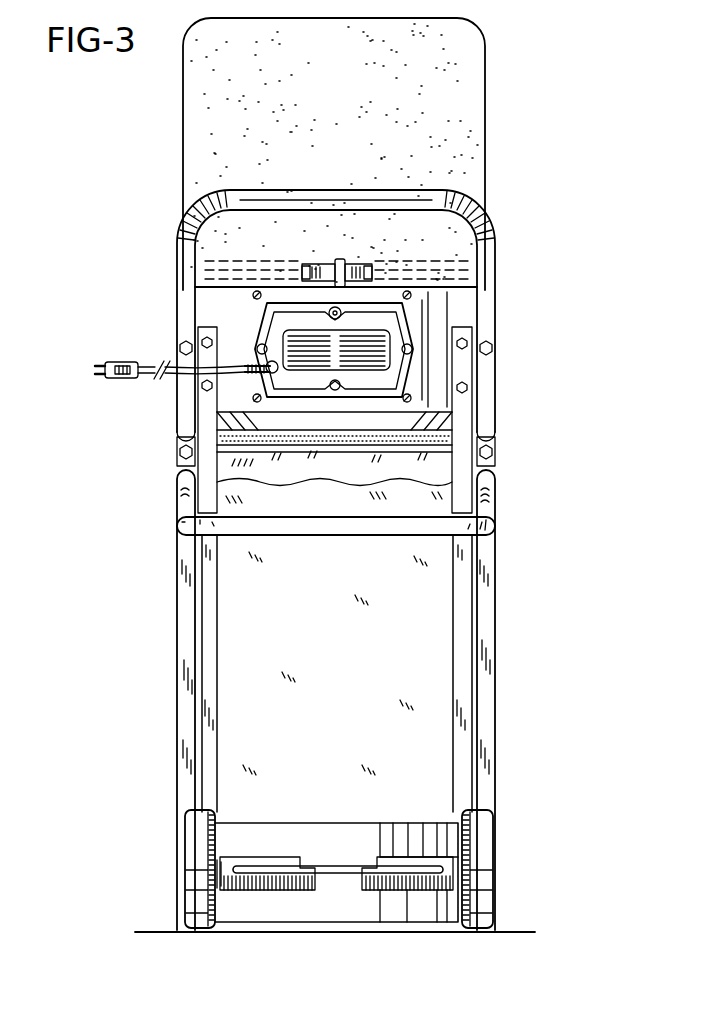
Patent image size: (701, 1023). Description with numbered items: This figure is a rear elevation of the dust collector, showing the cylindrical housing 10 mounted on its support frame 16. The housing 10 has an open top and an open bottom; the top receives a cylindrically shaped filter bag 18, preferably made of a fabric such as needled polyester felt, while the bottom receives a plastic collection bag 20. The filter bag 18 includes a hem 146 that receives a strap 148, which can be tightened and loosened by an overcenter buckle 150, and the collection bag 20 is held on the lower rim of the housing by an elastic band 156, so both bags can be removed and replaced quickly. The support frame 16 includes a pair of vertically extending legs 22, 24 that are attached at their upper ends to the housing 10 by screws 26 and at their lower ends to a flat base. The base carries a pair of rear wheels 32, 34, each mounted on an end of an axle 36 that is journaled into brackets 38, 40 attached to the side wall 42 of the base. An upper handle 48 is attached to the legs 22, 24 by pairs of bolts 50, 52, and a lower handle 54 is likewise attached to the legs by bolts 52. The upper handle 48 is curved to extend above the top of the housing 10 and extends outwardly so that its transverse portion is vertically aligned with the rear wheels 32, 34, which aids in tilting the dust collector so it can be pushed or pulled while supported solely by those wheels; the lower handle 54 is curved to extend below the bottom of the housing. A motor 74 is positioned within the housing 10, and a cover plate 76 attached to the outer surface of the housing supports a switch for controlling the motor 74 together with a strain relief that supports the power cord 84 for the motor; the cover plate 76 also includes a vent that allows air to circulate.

The cylindrical housing 10 is at (462, 306).
The support frame 16 is at (505, 556).
The filter bag 18 is at (346, 100).
The collection bag 20 is at (348, 666).
The leg 22 is at (486, 652).
The leg 24 is at (190, 617).
The screws 26 is at (204, 341).
The rear wheel 32 is at (481, 840).
The rear wheel 34 is at (196, 832).
The axle 36 is at (333, 875).
The bracket 38 is at (420, 885).
The bracket 40 is at (270, 885).
The side wall 42 is at (360, 838).
The upper handle 48 is at (486, 228).
The bolts 50 is at (179, 348).
The bolts 52 is at (178, 452).
The lower handle 54 is at (492, 483).
The motor 74 is at (315, 377).
The cover plate 76 is at (328, 313).
The power cord 84 is at (297, 337).
The hem 146 is at (383, 275).
The strap 148 is at (312, 262).
The overcenter buckle 150 is at (342, 258).
The elastic band 156 is at (327, 440).